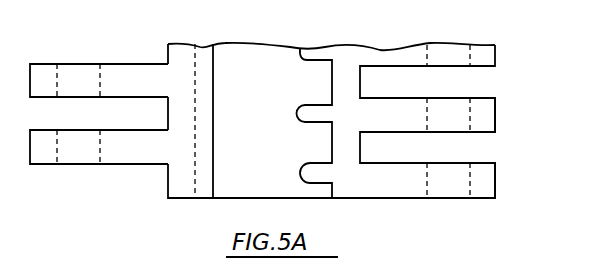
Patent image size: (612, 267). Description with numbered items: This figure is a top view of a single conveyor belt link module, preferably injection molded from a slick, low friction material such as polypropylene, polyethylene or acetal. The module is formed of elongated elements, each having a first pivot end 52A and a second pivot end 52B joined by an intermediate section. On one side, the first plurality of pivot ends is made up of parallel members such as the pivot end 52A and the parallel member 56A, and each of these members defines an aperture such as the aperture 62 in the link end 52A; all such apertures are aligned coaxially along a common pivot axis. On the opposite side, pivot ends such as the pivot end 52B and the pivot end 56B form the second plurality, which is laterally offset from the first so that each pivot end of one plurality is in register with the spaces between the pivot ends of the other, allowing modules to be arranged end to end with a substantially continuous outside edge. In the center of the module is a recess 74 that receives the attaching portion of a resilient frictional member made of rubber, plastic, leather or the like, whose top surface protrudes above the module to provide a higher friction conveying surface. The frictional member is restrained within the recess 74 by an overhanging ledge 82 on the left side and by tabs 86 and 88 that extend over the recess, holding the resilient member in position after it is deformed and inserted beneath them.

The first pivot end 52A is at (487, 172).
The second pivot end 52B is at (48, 160).
The parallel member 56A is at (487, 104).
The pivot end 56B is at (44, 68).
The aperture 62 is at (446, 190).
The recess 74 is at (257, 49).
The ledge 82 is at (214, 154).
The tab 86 is at (306, 113).
The tab 88 is at (306, 59).